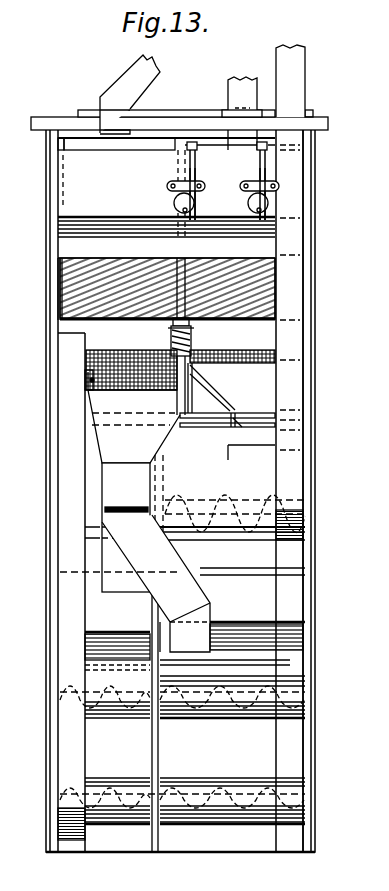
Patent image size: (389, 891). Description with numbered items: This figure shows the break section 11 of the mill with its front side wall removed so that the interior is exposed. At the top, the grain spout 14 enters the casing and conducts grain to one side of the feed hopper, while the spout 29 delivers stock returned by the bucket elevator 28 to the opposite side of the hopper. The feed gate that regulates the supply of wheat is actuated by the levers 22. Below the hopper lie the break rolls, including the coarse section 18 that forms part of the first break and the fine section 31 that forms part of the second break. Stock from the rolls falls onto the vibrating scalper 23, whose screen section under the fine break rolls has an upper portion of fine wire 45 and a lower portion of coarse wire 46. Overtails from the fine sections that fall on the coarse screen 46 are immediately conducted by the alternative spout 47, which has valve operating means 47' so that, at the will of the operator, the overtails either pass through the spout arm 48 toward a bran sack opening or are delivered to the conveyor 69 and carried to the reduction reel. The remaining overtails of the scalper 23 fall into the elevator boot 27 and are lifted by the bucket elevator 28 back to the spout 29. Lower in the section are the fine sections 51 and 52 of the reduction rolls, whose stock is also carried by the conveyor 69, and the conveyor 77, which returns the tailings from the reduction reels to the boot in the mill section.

The break section 11 is at (180, 115).
The grain spout 14 is at (251, 64).
The coarse section of break roll 18 is at (268, 288).
The levers 22 is at (258, 163).
The scalper 23 is at (233, 355).
The elevator boot 27 is at (249, 483).
The bucket elevator 28 is at (290, 394).
The spout 29 is at (121, 82).
The fine section of break roll 31 is at (62, 290).
The fine wire 45 is at (126, 355).
The coarse wire screen 46 is at (88, 372).
The alternative spout 47 is at (80, 527).
The valve operating means 47' is at (79, 519).
The spout arm 48 is at (177, 568).
The fine section of reduction roll 51 is at (125, 626).
The fine section of reduction roll 52 is at (100, 684).
The conveyor 69 is at (302, 698).
The conveyor 77 is at (305, 796).